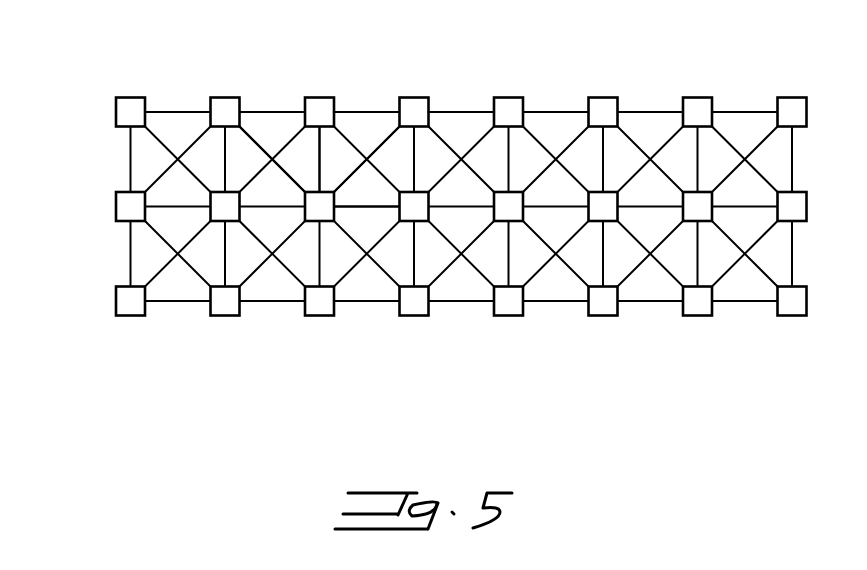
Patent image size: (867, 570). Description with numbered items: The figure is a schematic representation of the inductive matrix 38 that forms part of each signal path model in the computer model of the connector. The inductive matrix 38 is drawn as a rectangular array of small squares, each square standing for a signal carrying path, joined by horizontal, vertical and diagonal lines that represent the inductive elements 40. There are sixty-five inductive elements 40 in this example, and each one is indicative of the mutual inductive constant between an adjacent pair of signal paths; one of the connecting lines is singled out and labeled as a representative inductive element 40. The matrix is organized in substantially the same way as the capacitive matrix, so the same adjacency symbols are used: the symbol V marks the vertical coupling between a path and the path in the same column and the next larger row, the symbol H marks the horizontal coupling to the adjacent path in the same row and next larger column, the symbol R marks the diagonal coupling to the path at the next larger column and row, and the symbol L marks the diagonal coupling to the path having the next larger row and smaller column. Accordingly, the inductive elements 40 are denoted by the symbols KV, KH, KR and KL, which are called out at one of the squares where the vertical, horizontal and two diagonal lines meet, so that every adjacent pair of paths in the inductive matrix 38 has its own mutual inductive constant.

The inductive matrix 38 is at (414, 217).
The inductive element 40 is at (507, 314).
The left diagonal adjacency symbol L is at (255, 137).
The vertical adjacency symbol V is at (323, 153).
The right diagonal adjacency symbol R is at (387, 137).
The horizontal adjacency symbol H is at (368, 203).
The vertical inductive element symbol KV is at (261, 295).
The horizontal inductive element symbol KH is at (319, 206).
The right diagonal inductive element symbol KR is at (319, 206).
The left diagonal inductive element symbol KL is at (311, 212).